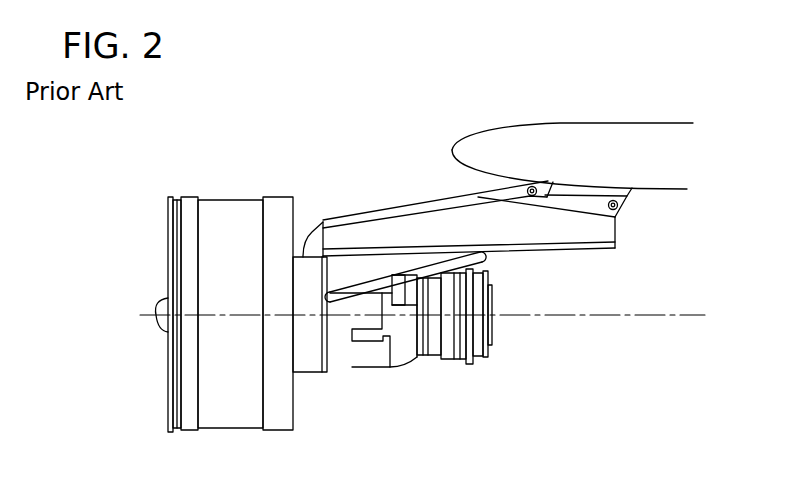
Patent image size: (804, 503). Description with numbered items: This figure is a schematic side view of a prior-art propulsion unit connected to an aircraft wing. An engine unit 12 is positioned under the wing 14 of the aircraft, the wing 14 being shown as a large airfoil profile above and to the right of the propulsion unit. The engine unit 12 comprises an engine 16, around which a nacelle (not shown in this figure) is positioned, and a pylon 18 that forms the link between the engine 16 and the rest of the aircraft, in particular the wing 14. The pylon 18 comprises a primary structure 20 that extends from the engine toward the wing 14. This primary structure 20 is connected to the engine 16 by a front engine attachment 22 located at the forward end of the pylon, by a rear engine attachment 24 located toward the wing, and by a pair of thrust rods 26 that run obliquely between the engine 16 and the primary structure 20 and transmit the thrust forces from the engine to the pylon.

The engine unit 12 is at (152, 351).
The wing 14 is at (557, 125).
The engine 16 is at (349, 357).
The pylon 18 is at (306, 184).
The primary structure 20 is at (361, 237).
The front engine attachment 22 is at (297, 250).
The rear engine attachment 24 is at (457, 233).
The thrust rods 26 is at (411, 255).